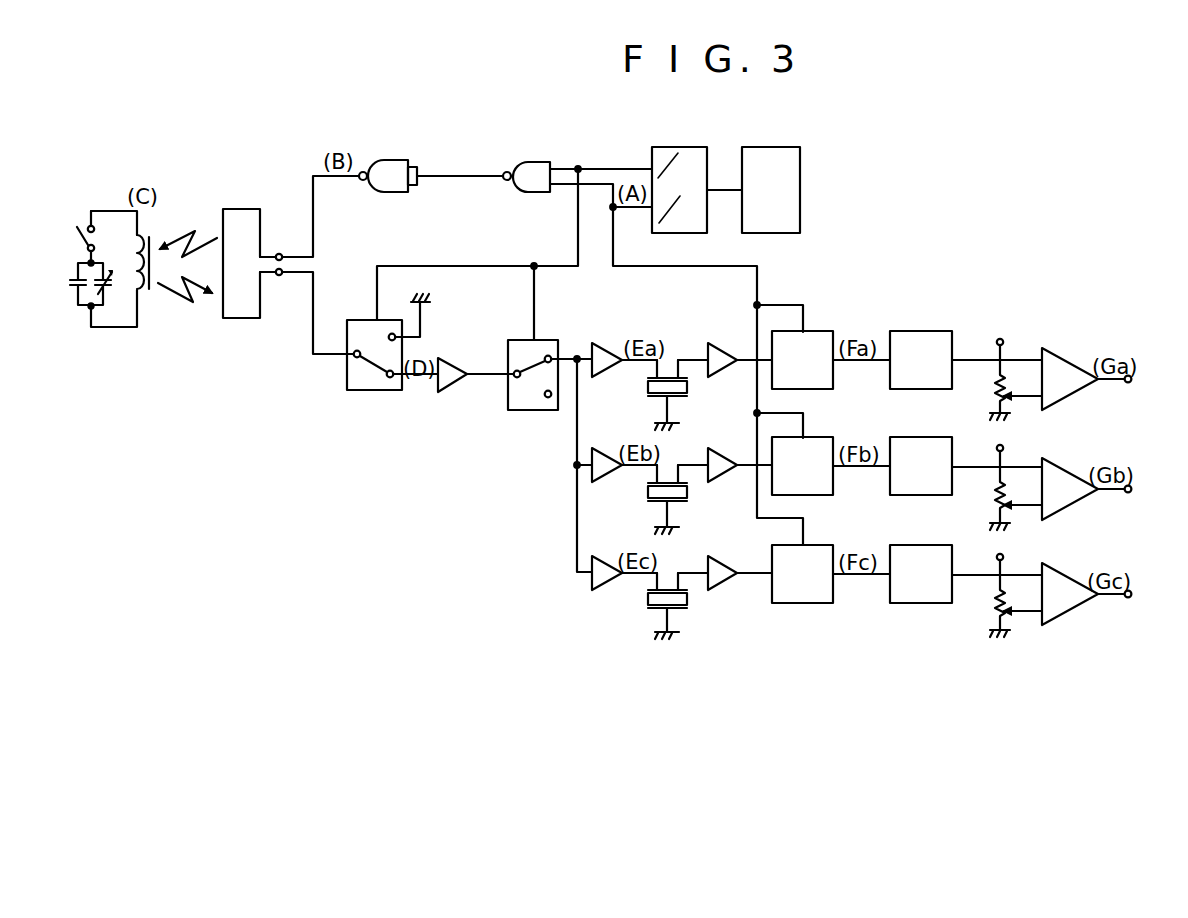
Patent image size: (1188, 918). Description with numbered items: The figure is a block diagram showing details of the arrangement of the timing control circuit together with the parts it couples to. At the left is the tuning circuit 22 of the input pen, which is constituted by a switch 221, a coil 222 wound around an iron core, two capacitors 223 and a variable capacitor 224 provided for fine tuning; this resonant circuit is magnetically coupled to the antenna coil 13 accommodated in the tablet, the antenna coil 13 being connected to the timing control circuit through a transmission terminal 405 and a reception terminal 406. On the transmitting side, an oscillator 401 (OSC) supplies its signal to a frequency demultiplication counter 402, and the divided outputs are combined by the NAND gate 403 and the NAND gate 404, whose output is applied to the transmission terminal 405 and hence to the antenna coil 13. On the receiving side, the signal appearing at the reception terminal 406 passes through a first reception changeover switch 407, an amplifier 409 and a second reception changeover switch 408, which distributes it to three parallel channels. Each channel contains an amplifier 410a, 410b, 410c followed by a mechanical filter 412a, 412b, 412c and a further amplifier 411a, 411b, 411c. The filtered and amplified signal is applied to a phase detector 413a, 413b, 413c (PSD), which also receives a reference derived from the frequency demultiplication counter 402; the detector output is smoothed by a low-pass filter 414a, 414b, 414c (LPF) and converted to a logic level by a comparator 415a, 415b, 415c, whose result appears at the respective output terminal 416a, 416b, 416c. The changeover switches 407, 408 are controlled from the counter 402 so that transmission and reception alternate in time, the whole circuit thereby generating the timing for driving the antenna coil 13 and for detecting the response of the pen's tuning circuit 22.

The antenna coil 13 is at (242, 209).
The tuning circuit 22 is at (123, 205).
The switch 221 is at (80, 236).
The coil 222 is at (143, 235).
The capacitors 223 is at (73, 284).
The variable capacitor 224 is at (113, 286).
The oscillator 401 is at (770, 147).
The frequency demultiplication counter 402 is at (688, 147).
The NAND gate 403 is at (530, 162).
The NAND gate 404 is at (392, 160).
The transmission terminal 405 is at (280, 254).
The reception terminal 406 is at (282, 276).
The reception changeover switch 407 is at (375, 393).
The reception changeover switch 408 is at (518, 412).
The amplifier 409 is at (463, 358).
The amplifier 410a is at (607, 343).
The amplifier 410b is at (602, 448).
The amplifier 410c is at (588, 578).
The amplifier 411a is at (727, 338).
The amplifier 411b is at (717, 450).
The amplifier 411c is at (727, 552).
The mechanical filter 412a is at (667, 377).
The mechanical filter 412b is at (647, 489).
The mechanical filter 412c is at (645, 597).
The phase detector 413a is at (822, 331).
The phase detector 413b is at (835, 424).
The phase detector 413c is at (838, 534).
The low-pass filter 414a is at (925, 331).
The low-pass filter 414b is at (925, 437).
The low-pass filter 414c is at (925, 545).
The comparator 415a is at (1073, 342).
The comparator 415b is at (1075, 448).
The comparator 415c is at (1068, 566).
The output terminal 416a is at (1133, 377).
The output terminal 416b is at (1133, 486).
The output terminal 416c is at (1133, 593).